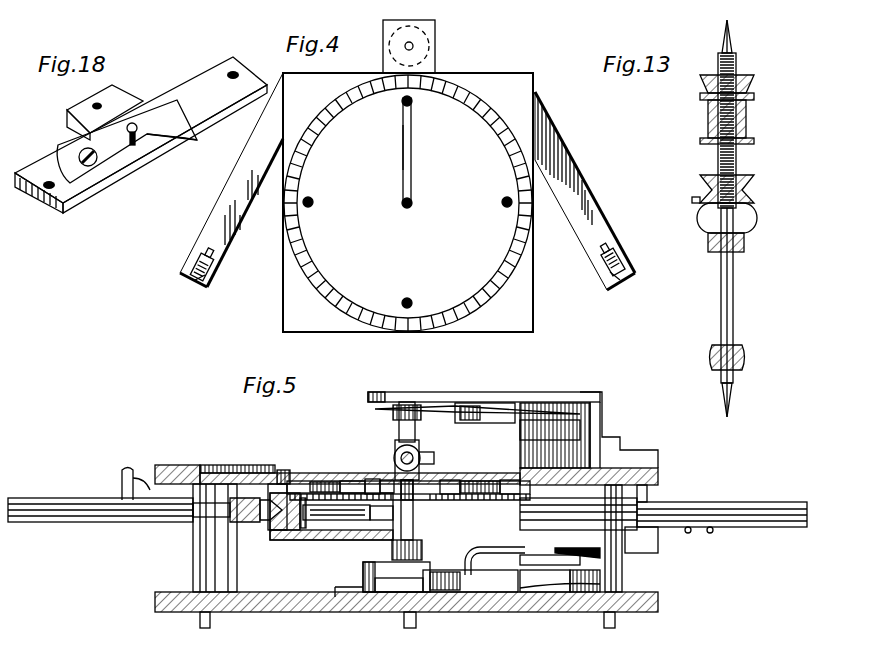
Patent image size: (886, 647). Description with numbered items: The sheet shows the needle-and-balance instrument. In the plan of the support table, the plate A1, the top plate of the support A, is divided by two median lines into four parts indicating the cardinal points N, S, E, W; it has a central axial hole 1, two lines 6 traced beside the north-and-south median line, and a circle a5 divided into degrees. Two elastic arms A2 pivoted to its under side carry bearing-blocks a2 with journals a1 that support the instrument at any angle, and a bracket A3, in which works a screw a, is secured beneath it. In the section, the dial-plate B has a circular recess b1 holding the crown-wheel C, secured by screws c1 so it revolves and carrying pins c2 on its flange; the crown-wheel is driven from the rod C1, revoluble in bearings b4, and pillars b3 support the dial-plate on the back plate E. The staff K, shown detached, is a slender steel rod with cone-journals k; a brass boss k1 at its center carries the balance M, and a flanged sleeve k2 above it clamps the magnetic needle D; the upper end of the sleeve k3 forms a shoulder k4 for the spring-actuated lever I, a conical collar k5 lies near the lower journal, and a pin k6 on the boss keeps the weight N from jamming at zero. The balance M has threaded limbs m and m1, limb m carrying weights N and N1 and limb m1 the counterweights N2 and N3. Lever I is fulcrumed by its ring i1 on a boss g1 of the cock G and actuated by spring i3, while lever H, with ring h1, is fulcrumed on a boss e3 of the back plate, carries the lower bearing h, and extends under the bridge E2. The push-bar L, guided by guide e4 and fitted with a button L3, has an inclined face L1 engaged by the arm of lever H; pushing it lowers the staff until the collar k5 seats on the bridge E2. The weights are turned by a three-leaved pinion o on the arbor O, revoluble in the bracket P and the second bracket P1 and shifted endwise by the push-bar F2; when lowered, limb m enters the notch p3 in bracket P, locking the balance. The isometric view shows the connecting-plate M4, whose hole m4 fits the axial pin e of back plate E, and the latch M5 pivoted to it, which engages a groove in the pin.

In FIG. 18, the connecting-plate M4 is at (215, 70).
In FIG. 18, the hole m4 is at (132, 127).
In FIG. 18, the latch M5 is at (152, 150).
In FIG. 4a, the compass box A is at (408, 202).
In FIG. 4a, the supporting plate A1 is at (411, 160).
In FIG. 4a, the pivoted arms A2 is at (232, 190).
In FIG. 4a, the plate or bracket A3 is at (422, 46).
In FIG. 4a, the pivot a is at (400, 43).
In FIG. 4a, the bearing pins or journals a1 is at (208, 276).
In FIG. 4a, the bearing-blocks a2 is at (205, 260).
In FIG. 4a, the graduated circle a5 is at (505, 305).
In FIG. 4a, the weight N is at (407, 113).
In FIG. 5, the weight N is at (388, 480).
In FIG. 4a, the south point S is at (408, 292).
In FIG. 4a, the back plate E is at (506, 190).
In FIG. 5, the back plate E is at (155, 603).
In FIG. 4a, the vibrator rod W is at (318, 199).
In FIG. 4a, the central hole 1 is at (410, 201).
In FIG. 4a, the traced lines 6 is at (397, 147).
In FIG. 13, the needle and balance staff K is at (734, 288).
In FIG. 5, the needle and balance staff K is at (413, 512).
In FIG. 13, the cone-journals k is at (729, 42).
In FIG. 13, the boss k1 is at (748, 196).
In FIG. 5, the boss k1 is at (420, 495).
In FIG. 13, the flanged sleeve k2 is at (746, 128).
In FIG. 5, the flanged sleeve k2 is at (416, 452).
In FIG. 5, the sleeve k3 is at (535, 588).
In FIG. 13, the bearing or shoulder k4 is at (738, 68).
In FIG. 5, the bearing or shoulder k4 is at (393, 414).
In FIG. 13, the collar or sleeve k5 is at (743, 358).
In FIG. 5, the collar or sleeve k5 is at (422, 550).
In FIG. 13, the pin k6 is at (692, 199).
In FIG. 5, the front or dial plate B is at (168, 466).
In FIG. 5, the circular recessed portion b1 is at (232, 466).
In FIG. 5, the pillars b3 is at (633, 580).
In FIG. 5, the bearings b4 is at (648, 492).
In FIG. 5, the crown-wheel C is at (322, 481).
In FIG. 5, the rod C1 is at (715, 502).
In FIG. 5, the screws c1 is at (275, 484).
In FIG. 5, the pins c2 is at (284, 470).
In FIG. 5, the weight-limb m is at (330, 482).
In FIG. 5, the scale or balance M is at (352, 481).
In FIG. 5, the counterpoise limb m1 is at (478, 500).
In FIG. 5, the second weight N1 is at (372, 479).
In FIG. 5, the counter-weight N2 is at (452, 480).
In FIG. 5, the second counterweight N3 is at (510, 480).
In FIG. 5, the spring-actuated lever I is at (426, 392).
In FIG. 5, the cock G is at (602, 395).
In FIG. 5, the boss g1 is at (493, 403).
In FIG. 5, the ring i1 is at (495, 423).
In FIG. 5, the spring i3 is at (545, 420).
In FIG. 5, the magnetic needle D is at (434, 458).
In FIG. 5, the arbor O is at (100, 523).
In FIG. 5, the push-bar F2 is at (122, 486).
In FIG. 5, the second bracket P1 is at (165, 525).
In FIG. 5, the bracket P is at (345, 540).
In FIG. 5, the notch p3 is at (296, 520).
In FIG. 5, the pinion o is at (325, 520).
In FIG. 5, the bridge E2 is at (363, 580).
In FIG. 5, the pivoted lever H is at (445, 592).
In FIG. 5, the bearing h is at (385, 592).
In FIG. 5, the ring h1 is at (535, 592).
In FIG. 5, the axial pin e is at (210, 620).
In FIG. 5, the boss e3 is at (580, 592).
In FIG. 5, the guide e4 is at (472, 565).
In FIG. 5, the push-bar L is at (650, 553).
In FIG. 5, the inclined face L1 is at (577, 545).
In FIG. 5, the button L3 is at (710, 534).